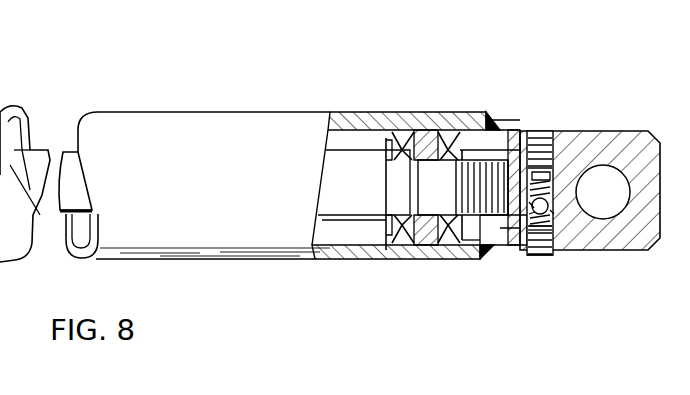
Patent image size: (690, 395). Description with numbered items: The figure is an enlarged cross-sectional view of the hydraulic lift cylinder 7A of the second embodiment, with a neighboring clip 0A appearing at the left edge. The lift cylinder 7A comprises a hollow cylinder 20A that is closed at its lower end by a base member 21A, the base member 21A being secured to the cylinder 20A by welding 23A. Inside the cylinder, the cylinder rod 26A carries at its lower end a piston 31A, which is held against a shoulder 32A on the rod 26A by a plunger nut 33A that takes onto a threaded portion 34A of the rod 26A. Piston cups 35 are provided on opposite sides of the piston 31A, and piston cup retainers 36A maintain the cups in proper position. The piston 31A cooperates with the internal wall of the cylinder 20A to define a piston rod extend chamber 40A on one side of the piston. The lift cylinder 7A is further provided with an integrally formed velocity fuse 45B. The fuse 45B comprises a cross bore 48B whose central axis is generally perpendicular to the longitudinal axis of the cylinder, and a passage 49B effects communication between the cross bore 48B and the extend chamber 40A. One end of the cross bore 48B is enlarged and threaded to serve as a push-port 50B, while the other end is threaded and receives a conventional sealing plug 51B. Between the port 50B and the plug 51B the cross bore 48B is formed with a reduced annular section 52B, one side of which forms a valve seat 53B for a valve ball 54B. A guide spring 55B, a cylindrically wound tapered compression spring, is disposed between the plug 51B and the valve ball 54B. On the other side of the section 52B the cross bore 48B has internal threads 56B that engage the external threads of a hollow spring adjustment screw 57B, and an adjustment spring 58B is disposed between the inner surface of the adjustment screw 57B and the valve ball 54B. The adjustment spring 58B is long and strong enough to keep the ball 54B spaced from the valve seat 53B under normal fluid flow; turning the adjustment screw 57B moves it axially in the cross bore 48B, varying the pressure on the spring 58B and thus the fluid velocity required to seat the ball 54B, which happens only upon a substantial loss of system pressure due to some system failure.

The lift cylinder 7A is at (118, 80).
The clip 0A is at (25, 170).
The hollow cylinder 20A is at (158, 112).
The base member 21A is at (646, 131).
The welding 23A is at (492, 126).
The cylinder rod 26A is at (454, 184).
The piston 31A is at (420, 168).
The shoulder 32A is at (387, 176).
The plunger nut 33A is at (475, 240).
The threaded portion 34A is at (478, 190).
The piston cups 35 is at (406, 146).
The piston cup retainers 36A is at (386, 140).
The piston rod extend chamber 40A is at (462, 158).
The velocity fuse 45B is at (548, 262).
The cross bore 48B is at (551, 220).
The passage 49B is at (520, 226).
The push-port 50B is at (549, 131).
The sealing plug 51B is at (537, 258).
The reduced annular section 52B is at (551, 199).
The valve seat 53B is at (552, 210).
The valve ball 54B is at (555, 226).
The guide spring 55B is at (553, 240).
The internal threads 56B is at (553, 184).
The spring adjustment screw 57B is at (550, 175).
The adjustment spring 58B is at (553, 196).